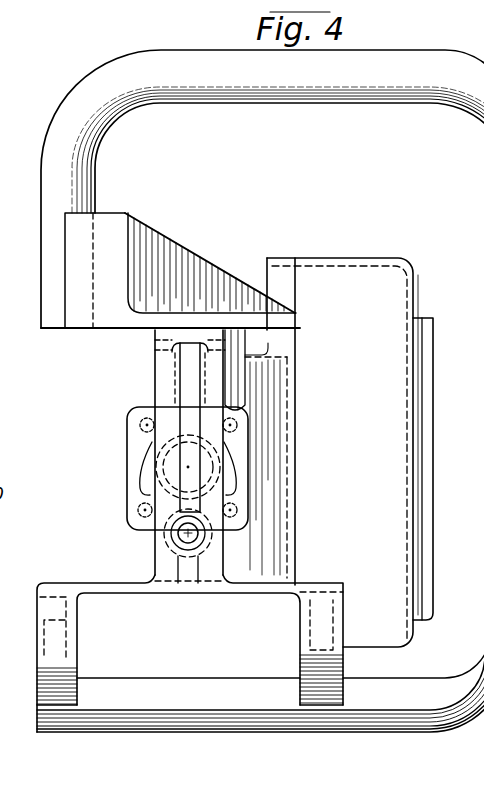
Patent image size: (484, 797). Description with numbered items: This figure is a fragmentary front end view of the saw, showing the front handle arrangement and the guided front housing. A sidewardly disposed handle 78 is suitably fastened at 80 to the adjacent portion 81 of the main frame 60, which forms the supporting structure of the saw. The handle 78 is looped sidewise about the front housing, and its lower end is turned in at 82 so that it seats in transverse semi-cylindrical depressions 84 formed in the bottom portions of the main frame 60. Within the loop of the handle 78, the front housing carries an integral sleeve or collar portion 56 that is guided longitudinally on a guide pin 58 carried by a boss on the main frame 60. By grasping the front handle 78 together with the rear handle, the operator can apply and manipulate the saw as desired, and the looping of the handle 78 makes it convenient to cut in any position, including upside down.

The sleeve or collar portion 56 is at (176, 538).
The guide pin 58 is at (207, 548).
The main frame 60 is at (256, 347).
The handle 78 is at (87, 184).
The fastening 80 is at (90, 252).
The adjacent portion 81 is at (163, 325).
The turned-in lower end 82 is at (230, 730).
The transverse semi-cylindrical depressions 84 is at (37, 683).